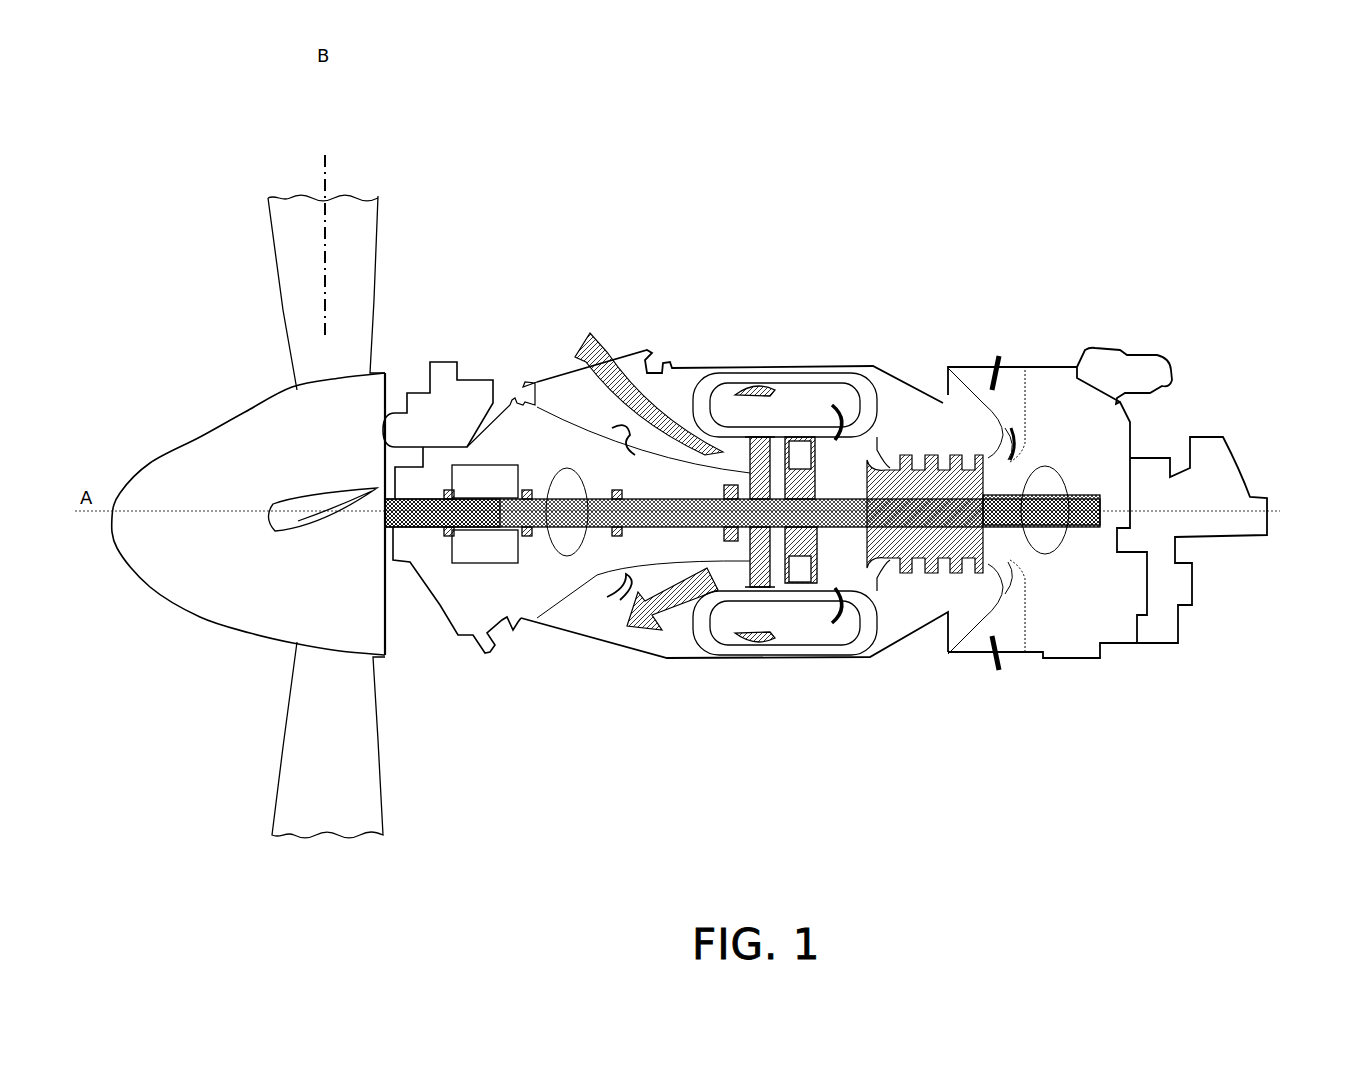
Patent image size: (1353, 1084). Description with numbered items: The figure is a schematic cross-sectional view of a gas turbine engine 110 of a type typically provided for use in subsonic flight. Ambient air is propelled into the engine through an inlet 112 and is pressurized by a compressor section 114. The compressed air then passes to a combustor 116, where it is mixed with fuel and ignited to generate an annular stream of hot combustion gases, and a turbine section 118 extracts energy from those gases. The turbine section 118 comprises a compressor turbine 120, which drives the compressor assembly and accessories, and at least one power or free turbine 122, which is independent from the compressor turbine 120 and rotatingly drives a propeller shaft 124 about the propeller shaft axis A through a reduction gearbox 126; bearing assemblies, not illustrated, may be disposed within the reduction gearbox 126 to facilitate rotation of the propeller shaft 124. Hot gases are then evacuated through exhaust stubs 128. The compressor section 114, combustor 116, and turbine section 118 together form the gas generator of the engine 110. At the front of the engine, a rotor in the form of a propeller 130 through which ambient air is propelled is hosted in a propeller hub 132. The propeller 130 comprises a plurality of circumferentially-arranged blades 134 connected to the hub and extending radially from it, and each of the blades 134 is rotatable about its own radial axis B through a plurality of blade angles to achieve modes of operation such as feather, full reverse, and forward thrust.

The gas turbine engine 110 is at (699, 262).
The inlet 112 is at (1003, 353).
The compressor section 114 is at (905, 400).
The combustor 116 is at (810, 400).
The turbine section 118 is at (772, 515).
The compressor turbine 120 is at (838, 540).
The power turbine 122 is at (757, 512).
The propeller shaft 124 is at (500, 550).
The reduction gearbox 126 is at (490, 500).
The exhaust stubs 128 is at (565, 343).
The propeller 130 is at (165, 256).
The propeller hub 132 is at (228, 432).
The blades 134 is at (297, 267).